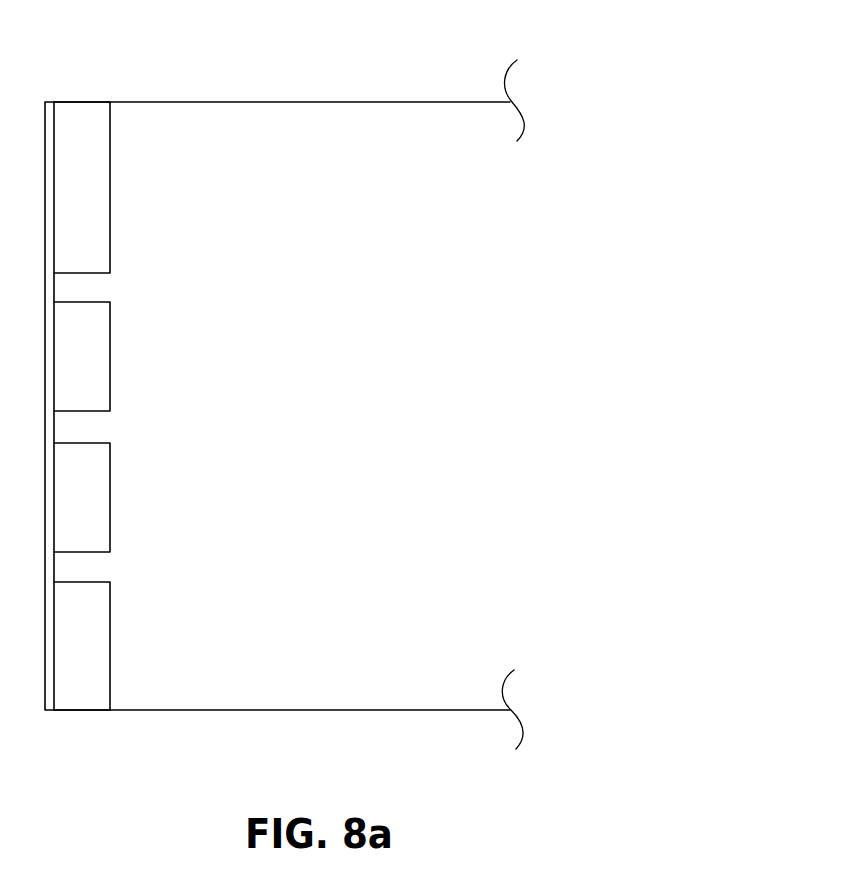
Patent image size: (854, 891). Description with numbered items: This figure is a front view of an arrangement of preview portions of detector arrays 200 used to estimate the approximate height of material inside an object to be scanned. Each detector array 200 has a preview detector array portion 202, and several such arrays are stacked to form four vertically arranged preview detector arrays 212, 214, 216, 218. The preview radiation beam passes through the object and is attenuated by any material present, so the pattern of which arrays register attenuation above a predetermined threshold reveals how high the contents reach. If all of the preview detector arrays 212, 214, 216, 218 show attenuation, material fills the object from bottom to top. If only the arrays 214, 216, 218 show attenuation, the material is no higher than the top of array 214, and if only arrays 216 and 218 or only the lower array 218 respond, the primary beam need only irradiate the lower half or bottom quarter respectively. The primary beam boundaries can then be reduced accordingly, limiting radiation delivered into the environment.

The detector array 200 is at (360, 100).
The preview detector array portion 202 is at (87, 102).
The preview detector array 212 is at (90, 187).
The preview detector array 214 is at (90, 350).
The preview detector array 216 is at (90, 497).
The preview detector array 218 is at (90, 643).